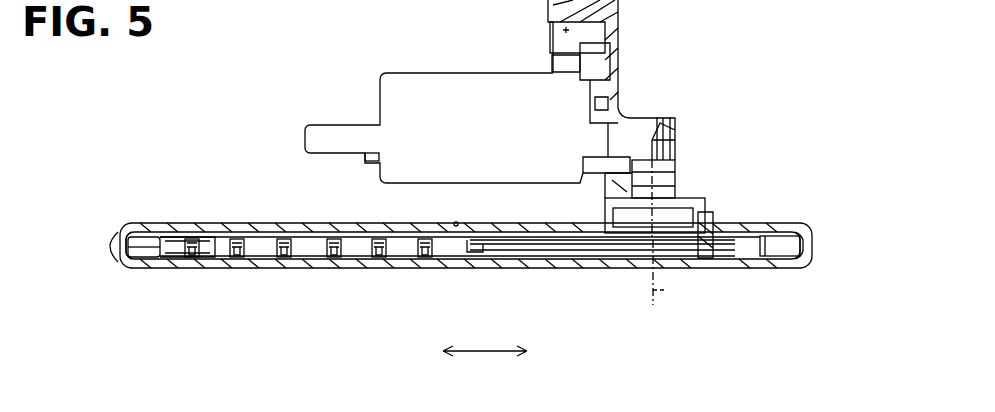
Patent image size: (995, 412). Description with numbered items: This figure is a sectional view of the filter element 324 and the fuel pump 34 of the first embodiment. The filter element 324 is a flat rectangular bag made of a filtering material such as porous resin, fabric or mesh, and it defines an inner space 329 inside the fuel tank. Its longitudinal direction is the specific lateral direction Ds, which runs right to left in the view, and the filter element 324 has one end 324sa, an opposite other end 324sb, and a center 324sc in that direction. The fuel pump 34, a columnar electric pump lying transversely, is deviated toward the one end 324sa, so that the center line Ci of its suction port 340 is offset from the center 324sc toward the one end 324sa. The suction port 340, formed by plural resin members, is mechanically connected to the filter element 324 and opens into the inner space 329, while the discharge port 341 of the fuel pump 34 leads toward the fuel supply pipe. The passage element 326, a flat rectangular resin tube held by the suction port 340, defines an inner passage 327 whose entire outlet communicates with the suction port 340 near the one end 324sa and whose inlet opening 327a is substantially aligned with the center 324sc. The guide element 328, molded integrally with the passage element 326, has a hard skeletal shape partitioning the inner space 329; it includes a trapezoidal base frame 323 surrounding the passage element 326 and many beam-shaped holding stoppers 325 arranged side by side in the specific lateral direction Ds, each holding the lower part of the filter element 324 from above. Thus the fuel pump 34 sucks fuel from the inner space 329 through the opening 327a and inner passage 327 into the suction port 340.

The fuel pump 34 is at (618, 110).
The filter element 324 is at (773, 262).
The one end of the filter element 324sa is at (810, 222).
The other end of the filter element 324sb is at (120, 226).
The center of the filter element 324sc is at (457, 222).
The discharge port 341 is at (317, 132).
The suction port 340 is at (680, 210).
The inner space 329 is at (128, 264).
The inner passage 327 is at (578, 255).
The opening 327a is at (474, 247).
The holding stopper 325 is at (186, 259).
The base frame 323 is at (362, 259).
The guide element 328 is at (428, 320).
The passage element 326 is at (725, 258).
The center line of the suction port Ci is at (667, 290).
The specific lateral direction Ds is at (485, 367).